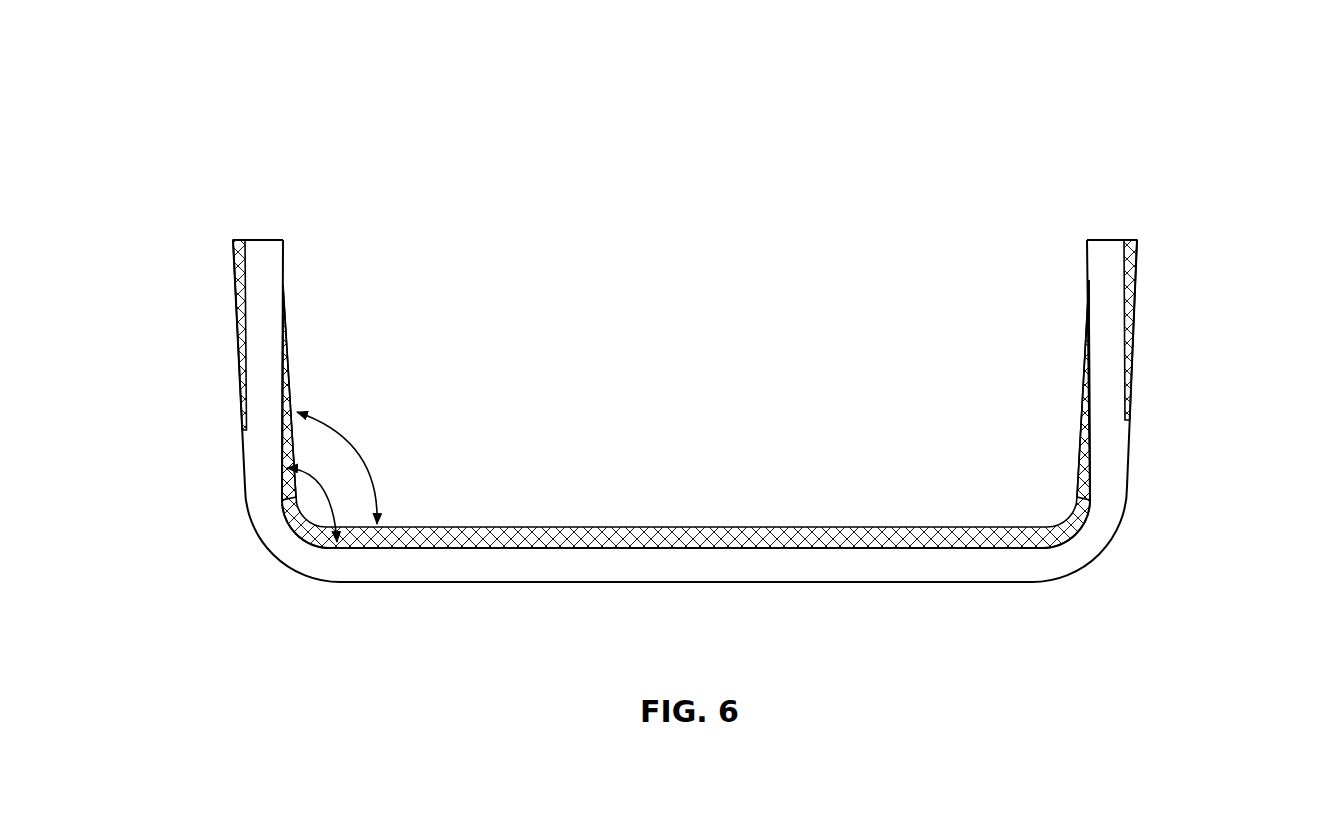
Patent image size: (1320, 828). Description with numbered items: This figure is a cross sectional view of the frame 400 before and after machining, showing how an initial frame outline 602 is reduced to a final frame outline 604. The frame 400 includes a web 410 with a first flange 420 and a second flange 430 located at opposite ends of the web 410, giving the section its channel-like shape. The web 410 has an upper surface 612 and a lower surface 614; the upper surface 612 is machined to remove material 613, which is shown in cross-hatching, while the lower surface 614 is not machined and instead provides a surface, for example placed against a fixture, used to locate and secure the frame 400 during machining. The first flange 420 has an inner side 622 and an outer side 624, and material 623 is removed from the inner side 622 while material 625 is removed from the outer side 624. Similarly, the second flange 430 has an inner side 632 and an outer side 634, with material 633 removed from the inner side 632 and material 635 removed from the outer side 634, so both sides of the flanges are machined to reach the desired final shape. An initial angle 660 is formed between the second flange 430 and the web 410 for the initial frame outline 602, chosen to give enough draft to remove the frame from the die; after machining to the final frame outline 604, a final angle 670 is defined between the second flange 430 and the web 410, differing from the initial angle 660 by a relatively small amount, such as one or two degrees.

The frame 400 is at (1009, 57).
The web 410 is at (735, 570).
The first flange 420 is at (1117, 435).
The second flange 430 is at (258, 430).
The initial frame outline 602 is at (764, 366).
The final frame outline 604 is at (399, 543).
The upper surface 612 is at (838, 505).
The removed material 613 is at (890, 538).
The lower surface 614 is at (876, 603).
The inner side 622 is at (1035, 262).
The removed material 623 is at (1077, 358).
The outer side 624 is at (1203, 270).
The removed material 625 is at (1124, 275).
The inner side 632 is at (344, 266).
The removed material 633 is at (290, 357).
The outer side 634 is at (212, 298).
The removed material 635 is at (252, 288).
The initial angle 660 is at (358, 442).
The final angle 670 is at (330, 489).